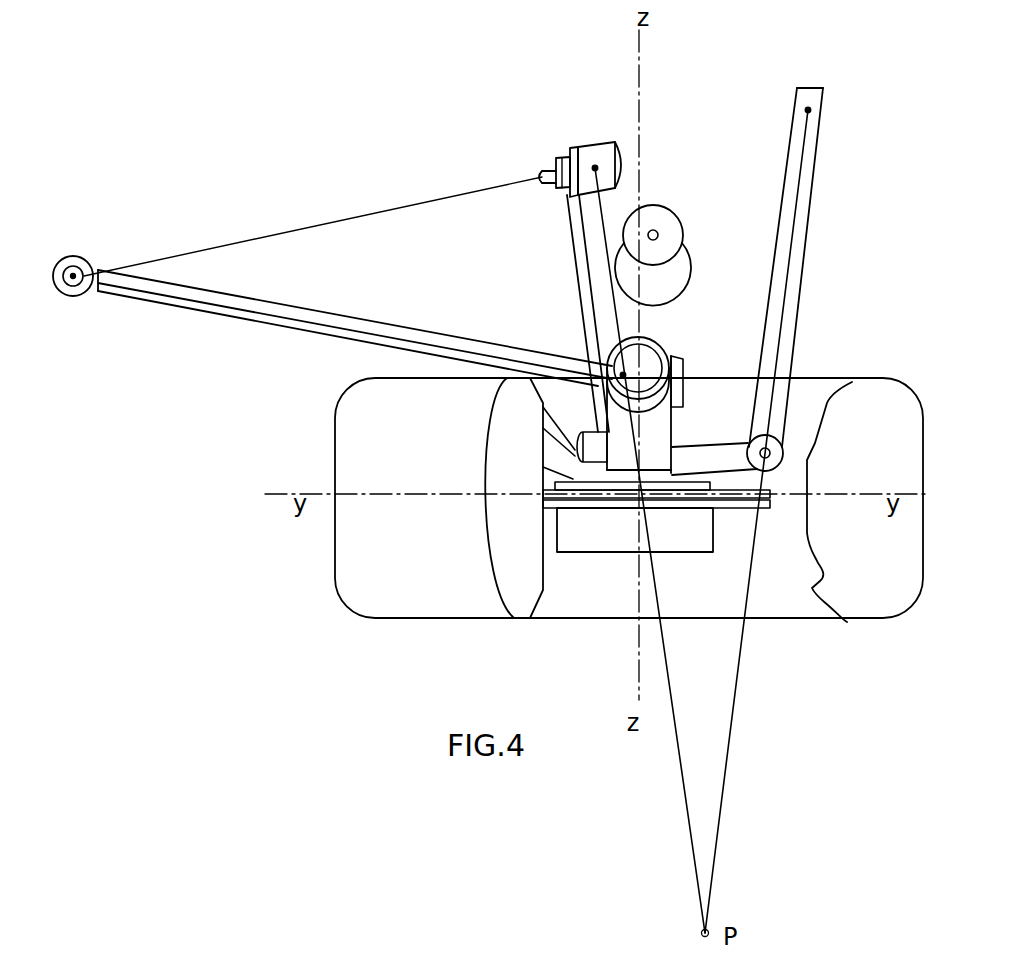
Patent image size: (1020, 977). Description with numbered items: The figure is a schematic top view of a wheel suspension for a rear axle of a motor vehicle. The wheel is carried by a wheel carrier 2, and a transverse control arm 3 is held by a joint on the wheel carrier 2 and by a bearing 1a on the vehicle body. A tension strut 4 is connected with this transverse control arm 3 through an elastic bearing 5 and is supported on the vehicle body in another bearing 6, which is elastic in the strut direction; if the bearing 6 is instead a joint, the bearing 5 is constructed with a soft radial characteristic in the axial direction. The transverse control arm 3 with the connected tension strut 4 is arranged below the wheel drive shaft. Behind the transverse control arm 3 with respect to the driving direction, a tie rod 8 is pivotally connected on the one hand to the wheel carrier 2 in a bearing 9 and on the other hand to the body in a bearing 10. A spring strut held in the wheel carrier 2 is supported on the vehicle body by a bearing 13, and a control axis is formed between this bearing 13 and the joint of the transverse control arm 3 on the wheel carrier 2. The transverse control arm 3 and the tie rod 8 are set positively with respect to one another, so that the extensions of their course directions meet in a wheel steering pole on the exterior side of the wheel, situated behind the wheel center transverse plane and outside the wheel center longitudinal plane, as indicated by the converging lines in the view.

The bearing 1a is at (596, 164).
The wheel carrier 2 is at (731, 458).
The transverse control arm 3 is at (592, 213).
The tension strut 4 is at (362, 327).
The elastic bearing 5 is at (625, 373).
The bearing 6 is at (76, 272).
The tie rod 8 is at (790, 262).
The bearing 9 is at (771, 452).
The bearing 10 is at (807, 109).
The bearing 13 is at (659, 233).